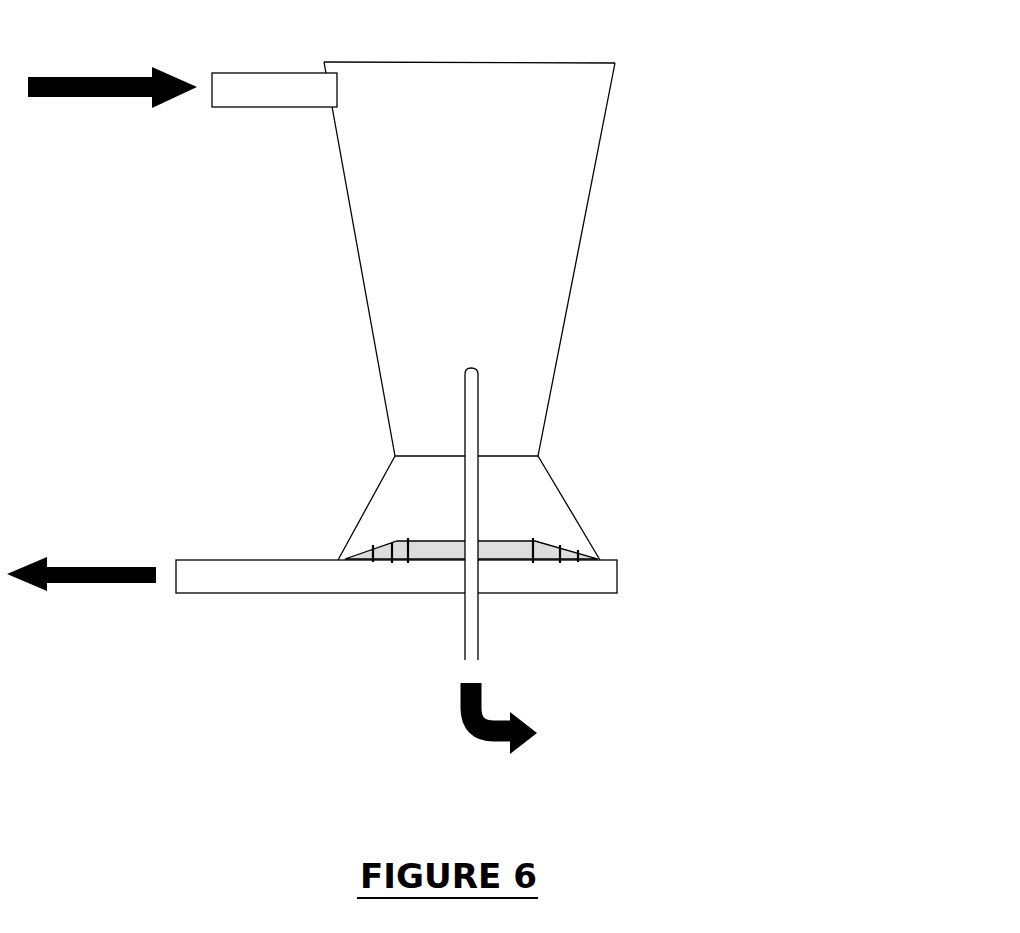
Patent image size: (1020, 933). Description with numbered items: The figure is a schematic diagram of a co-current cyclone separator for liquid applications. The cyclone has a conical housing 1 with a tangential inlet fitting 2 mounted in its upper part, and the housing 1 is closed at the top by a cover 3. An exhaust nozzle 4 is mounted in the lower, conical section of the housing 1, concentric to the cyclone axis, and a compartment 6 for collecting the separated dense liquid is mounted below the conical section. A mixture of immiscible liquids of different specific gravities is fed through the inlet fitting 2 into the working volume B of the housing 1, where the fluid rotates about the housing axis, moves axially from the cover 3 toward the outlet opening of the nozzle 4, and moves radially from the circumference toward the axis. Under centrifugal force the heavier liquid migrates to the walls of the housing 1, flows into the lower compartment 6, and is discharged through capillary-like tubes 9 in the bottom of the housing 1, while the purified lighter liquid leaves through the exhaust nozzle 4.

The conical housing 1 is at (605, 127).
The tangential inlet fitting 2 is at (258, 107).
The cover 3 is at (520, 63).
The working volume B is at (485, 218).
The compartment 6 is at (523, 474).
The capillary-like tubes 9 is at (600, 557).
The exhaust nozzle 4 is at (480, 626).